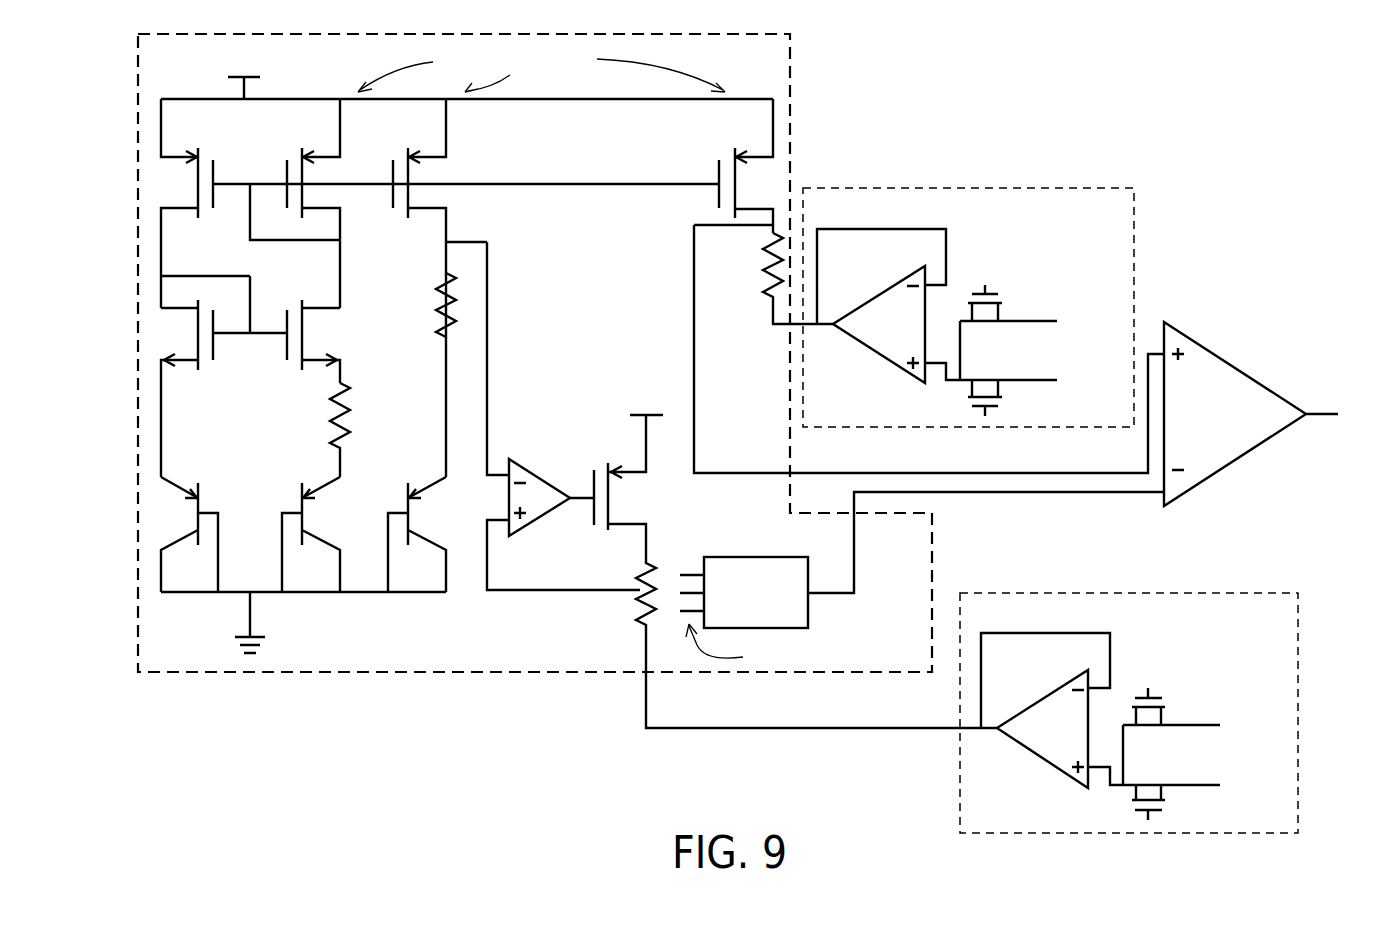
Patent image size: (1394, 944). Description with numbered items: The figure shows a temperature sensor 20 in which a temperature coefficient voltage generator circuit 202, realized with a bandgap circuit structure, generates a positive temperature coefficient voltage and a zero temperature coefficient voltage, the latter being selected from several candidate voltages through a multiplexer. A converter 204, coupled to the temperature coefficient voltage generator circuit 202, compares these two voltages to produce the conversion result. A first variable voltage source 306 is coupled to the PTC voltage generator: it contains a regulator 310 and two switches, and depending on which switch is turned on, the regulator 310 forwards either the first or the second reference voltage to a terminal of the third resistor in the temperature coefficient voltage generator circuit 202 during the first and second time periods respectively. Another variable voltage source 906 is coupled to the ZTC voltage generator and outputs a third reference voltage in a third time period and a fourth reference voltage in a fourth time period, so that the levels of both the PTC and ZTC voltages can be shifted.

The temperature sensor 20 is at (1160, 128).
The temperature coefficient voltage generator circuit 202 is at (933, 551).
The converter 204 is at (1240, 466).
The variable voltage source 306 is at (955, 188).
The regulator 310 is at (913, 337).
The variable voltage source 906 is at (1122, 593).